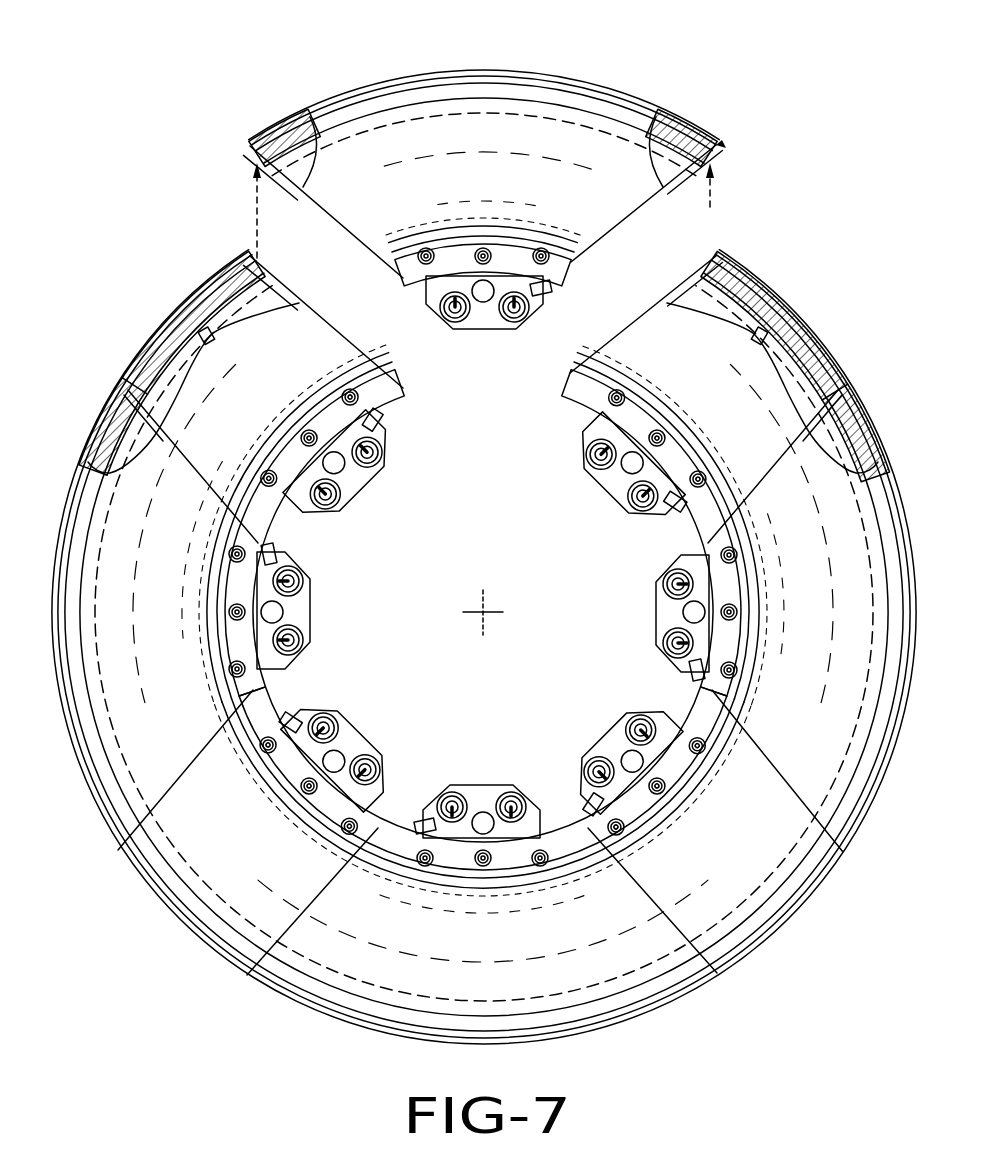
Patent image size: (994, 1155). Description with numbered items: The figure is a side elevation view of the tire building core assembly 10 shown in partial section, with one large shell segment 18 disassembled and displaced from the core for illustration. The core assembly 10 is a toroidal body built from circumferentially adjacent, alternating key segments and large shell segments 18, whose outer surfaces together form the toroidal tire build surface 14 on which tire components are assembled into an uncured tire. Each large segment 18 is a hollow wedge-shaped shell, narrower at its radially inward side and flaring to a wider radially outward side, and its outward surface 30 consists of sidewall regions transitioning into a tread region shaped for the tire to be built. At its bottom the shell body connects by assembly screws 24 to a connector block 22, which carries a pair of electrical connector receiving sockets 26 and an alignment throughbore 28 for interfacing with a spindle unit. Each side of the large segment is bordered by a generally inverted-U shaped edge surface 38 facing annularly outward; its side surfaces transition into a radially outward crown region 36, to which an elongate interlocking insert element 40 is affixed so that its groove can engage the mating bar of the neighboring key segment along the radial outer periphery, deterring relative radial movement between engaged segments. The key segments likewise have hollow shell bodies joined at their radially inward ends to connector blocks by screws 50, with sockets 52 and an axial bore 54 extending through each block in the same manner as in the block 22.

The tire building core assembly 10 is at (70, 292).
The toroidal tire build surface 14 is at (884, 853).
The large shell segment 18 is at (521, 147).
The connector block 22 is at (437, 291).
The assembly screws 24 is at (556, 266).
The electrical connector receiving sockets 26 is at (520, 313).
The alignment throughbore 28 is at (483, 302).
The outward surface 30 is at (431, 100).
The crown region 36 is at (690, 124).
The edge surface 38 is at (597, 247).
The interlocking insert element 40 is at (712, 150).
The screws 50 is at (695, 470).
The sockets 52 is at (643, 500).
The axial bore 54 is at (624, 467).